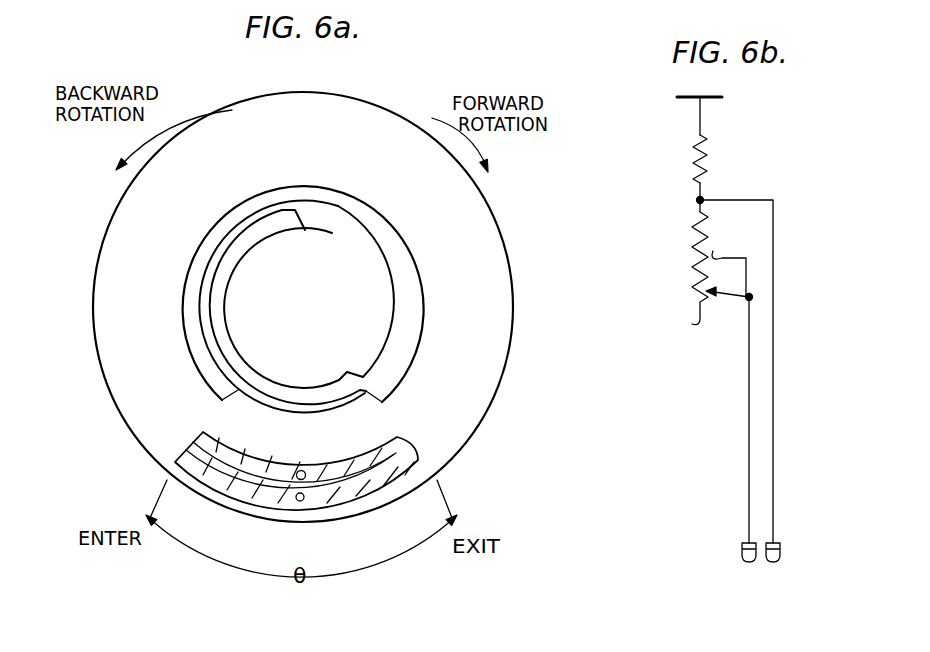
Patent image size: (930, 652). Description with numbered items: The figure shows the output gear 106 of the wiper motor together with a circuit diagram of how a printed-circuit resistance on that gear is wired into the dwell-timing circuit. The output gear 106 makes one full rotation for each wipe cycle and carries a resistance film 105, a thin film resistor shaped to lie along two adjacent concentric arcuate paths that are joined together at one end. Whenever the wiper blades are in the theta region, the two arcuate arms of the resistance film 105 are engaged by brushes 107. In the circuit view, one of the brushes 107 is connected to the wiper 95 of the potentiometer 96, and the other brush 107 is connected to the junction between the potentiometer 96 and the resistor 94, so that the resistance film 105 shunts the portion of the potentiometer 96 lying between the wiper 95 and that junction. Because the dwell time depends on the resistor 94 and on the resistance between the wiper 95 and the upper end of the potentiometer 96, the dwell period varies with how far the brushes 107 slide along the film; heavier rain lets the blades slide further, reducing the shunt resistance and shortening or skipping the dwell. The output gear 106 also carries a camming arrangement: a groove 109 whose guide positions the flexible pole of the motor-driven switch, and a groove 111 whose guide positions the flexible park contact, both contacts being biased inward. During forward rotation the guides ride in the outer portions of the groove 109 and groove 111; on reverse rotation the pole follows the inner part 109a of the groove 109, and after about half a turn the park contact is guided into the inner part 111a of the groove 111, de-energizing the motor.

In FIG. 6b, the resistor 94 is at (708, 165).
In FIG. 6b, the wiper 95 is at (716, 304).
In FIG. 6b, the potentiometer 96 is at (691, 293).
In FIG. 6a, the resistance film 105 is at (412, 447).
In FIG. 6a, the output gear 106 is at (508, 351).
In FIG. 6a, the brushes 107 is at (302, 470).
In FIG. 6b, the brushes 107 is at (766, 565).
In FIG. 6a, the groove 109 is at (404, 236).
In FIG. 6a, the inner part of groove 109a is at (232, 222).
In FIG. 6a, the groove 111 is at (390, 279).
In FIG. 6a, the inner part of groove 111a is at (329, 236).